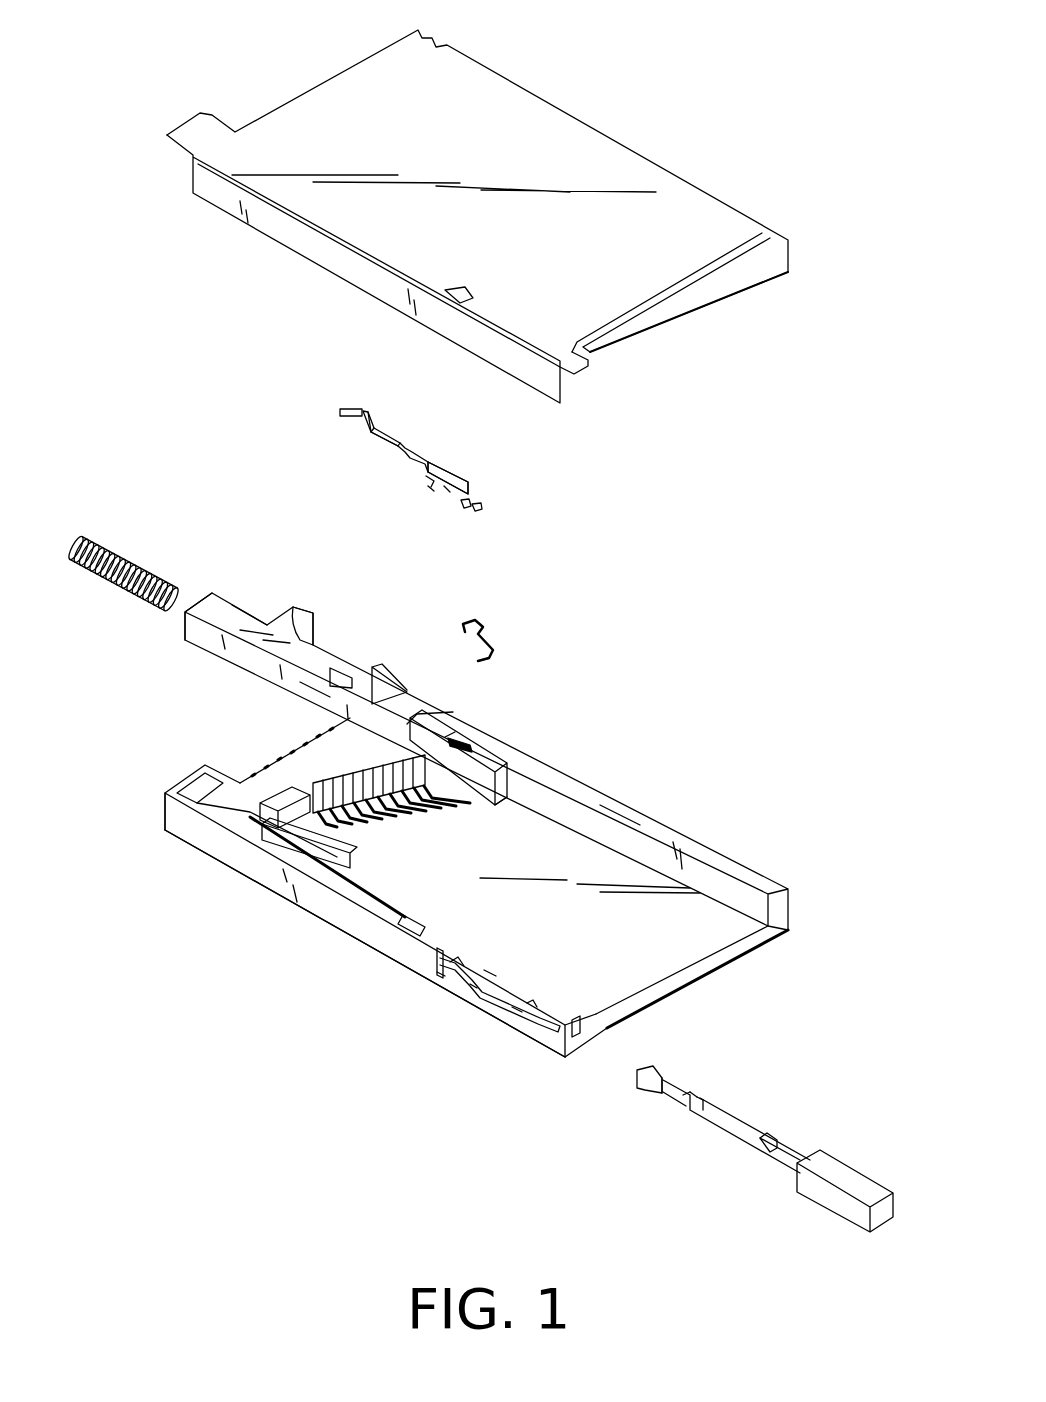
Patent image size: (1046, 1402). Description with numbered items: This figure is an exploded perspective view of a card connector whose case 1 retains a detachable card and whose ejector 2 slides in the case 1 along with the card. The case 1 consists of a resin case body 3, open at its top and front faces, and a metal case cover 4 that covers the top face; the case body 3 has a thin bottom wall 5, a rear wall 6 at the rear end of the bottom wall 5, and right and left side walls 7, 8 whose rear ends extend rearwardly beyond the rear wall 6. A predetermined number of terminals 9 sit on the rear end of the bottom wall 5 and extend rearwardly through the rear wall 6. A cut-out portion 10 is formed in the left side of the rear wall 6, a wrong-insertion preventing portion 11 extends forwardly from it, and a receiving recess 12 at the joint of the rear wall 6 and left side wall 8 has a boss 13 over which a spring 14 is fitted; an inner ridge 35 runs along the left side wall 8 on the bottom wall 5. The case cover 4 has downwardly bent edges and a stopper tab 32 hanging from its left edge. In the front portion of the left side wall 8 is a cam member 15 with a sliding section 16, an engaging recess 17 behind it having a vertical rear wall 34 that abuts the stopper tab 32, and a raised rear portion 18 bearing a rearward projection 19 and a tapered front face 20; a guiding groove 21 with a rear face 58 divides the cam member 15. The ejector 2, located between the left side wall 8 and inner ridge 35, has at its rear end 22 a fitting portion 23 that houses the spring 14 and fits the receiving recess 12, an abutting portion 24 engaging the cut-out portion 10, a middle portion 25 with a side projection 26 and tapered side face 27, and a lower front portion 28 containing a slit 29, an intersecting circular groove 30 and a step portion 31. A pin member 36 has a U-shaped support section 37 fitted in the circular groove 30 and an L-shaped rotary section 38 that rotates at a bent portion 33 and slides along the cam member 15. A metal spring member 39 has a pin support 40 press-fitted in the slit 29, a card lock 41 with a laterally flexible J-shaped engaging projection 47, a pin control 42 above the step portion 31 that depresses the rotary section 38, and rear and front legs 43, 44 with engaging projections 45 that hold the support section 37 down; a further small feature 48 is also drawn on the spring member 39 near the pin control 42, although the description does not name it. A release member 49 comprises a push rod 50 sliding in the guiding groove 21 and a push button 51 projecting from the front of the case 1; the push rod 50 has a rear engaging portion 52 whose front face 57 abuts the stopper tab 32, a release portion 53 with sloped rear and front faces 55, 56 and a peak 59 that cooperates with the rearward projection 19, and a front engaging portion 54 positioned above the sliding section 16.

The case 1 is at (636, 345).
The ejector 2 is at (221, 592).
The case body 3 is at (731, 851).
The case cover 4 is at (614, 134).
The bottom wall 5 is at (710, 937).
The rear wall 6 is at (302, 770).
The right side wall 7 is at (622, 795).
The left side wall 8 is at (263, 870).
The terminals 9 is at (421, 818).
The cut-out portion 10 is at (240, 818).
The wrong-insertion preventing portion 11 is at (340, 855).
The receiving recess 12 is at (165, 791).
The boss 13 is at (220, 783).
The spring 14 is at (115, 553).
The cam member 15 is at (503, 1001).
The sliding section 16 is at (531, 1006).
The engaging recess 17 is at (438, 974).
The raised rear portion 18 is at (488, 971).
The rearward projection 19 is at (455, 965).
The tapered front face 20 is at (473, 986).
The guiding groove 21 is at (517, 1011).
The rear end 22 is at (234, 612).
The fitting portion 23 is at (217, 618).
The abutting portion 24 is at (301, 616).
The middle portion 25 is at (303, 693).
The side projection 26 is at (353, 688).
The tapered side face 27 is at (378, 700).
The front portion 28 is at (507, 748).
The slit 29 is at (467, 747).
The circular groove 30 is at (453, 740).
The step portion 31 is at (515, 802).
The stopper tab 32 is at (458, 291).
The bent portion 33 is at (460, 625).
The vertical rear wall 34 is at (438, 960).
The inner ridge 35 is at (583, 1026).
The pin member 36 is at (491, 622).
The U-shaped support section 37 is at (479, 623).
The L-shaped rotary section 38 is at (473, 649).
The spring member 39 is at (448, 458).
The pin support 40 is at (470, 487).
The card lock 41 is at (390, 436).
The pin control 42 is at (447, 491).
The rear leg 43 is at (430, 490).
The front leg 44 is at (463, 508).
The engaging projection 45 is at (428, 481).
The J-shaped engaging projection 47 is at (362, 408).
The lever tab 48 is at (481, 508).
The release member 49 is at (767, 1163).
The push rod 50 is at (713, 1137).
The push button 51 is at (840, 1202).
The rear engaging portion 52 is at (650, 1073).
The release portion 53 is at (701, 1102).
The front engaging portion 54 is at (775, 1140).
The sloped rear face 55 is at (686, 1096).
The sloped front face 56 is at (705, 1108).
The front face 57 is at (665, 1093).
The rear face 58 is at (414, 926).
The peak 59 is at (694, 1097).